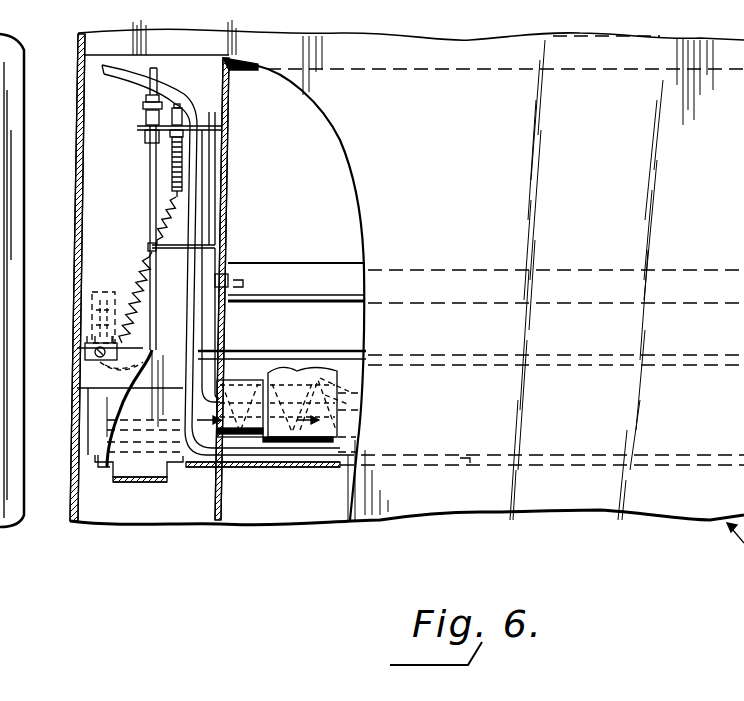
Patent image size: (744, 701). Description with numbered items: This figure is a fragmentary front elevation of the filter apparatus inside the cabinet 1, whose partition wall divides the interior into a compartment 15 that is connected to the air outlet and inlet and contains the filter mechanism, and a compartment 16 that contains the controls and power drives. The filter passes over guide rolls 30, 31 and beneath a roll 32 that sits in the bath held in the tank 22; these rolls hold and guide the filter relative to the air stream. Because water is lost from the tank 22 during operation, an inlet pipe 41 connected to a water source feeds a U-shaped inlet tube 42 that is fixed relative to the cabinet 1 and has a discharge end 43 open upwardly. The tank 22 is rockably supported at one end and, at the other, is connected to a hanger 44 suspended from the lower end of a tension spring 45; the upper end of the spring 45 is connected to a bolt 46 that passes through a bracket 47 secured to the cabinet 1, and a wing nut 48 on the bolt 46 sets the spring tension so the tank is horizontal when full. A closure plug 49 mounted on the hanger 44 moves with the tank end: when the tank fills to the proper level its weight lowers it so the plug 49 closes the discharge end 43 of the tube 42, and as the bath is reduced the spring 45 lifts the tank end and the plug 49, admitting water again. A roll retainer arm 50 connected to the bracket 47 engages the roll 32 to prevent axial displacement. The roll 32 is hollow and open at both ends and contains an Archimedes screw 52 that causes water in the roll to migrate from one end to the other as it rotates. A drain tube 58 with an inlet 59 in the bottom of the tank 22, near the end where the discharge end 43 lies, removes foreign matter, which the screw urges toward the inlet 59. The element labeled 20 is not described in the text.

The cabinet 1 is at (53, 424).
The compartment 15 is at (27, 263).
The compartment 16 is at (407, 277).
The filter element 20 is at (300, 370).
The tank 22 is at (267, 473).
The guide roll 30 is at (355, 265).
The guide roll 31 is at (387, 70).
The roll 32 is at (250, 380).
The inlet pipe 41 is at (158, 73).
The U-shaped inlet tube 42 is at (148, 207).
The discharge end 43 is at (100, 325).
The hanger 44 is at (87, 357).
The tension spring 45 is at (146, 268).
The bolt 46 is at (172, 157).
The bracket 47 is at (146, 121).
The wing nut 48 is at (184, 118).
The closure plug 49 is at (92, 300).
The roll retainer arm 50 is at (207, 343).
The Archimedes screw 52 is at (360, 393).
The drain tube 58 is at (100, 66).
The inlet 59 is at (433, 466).